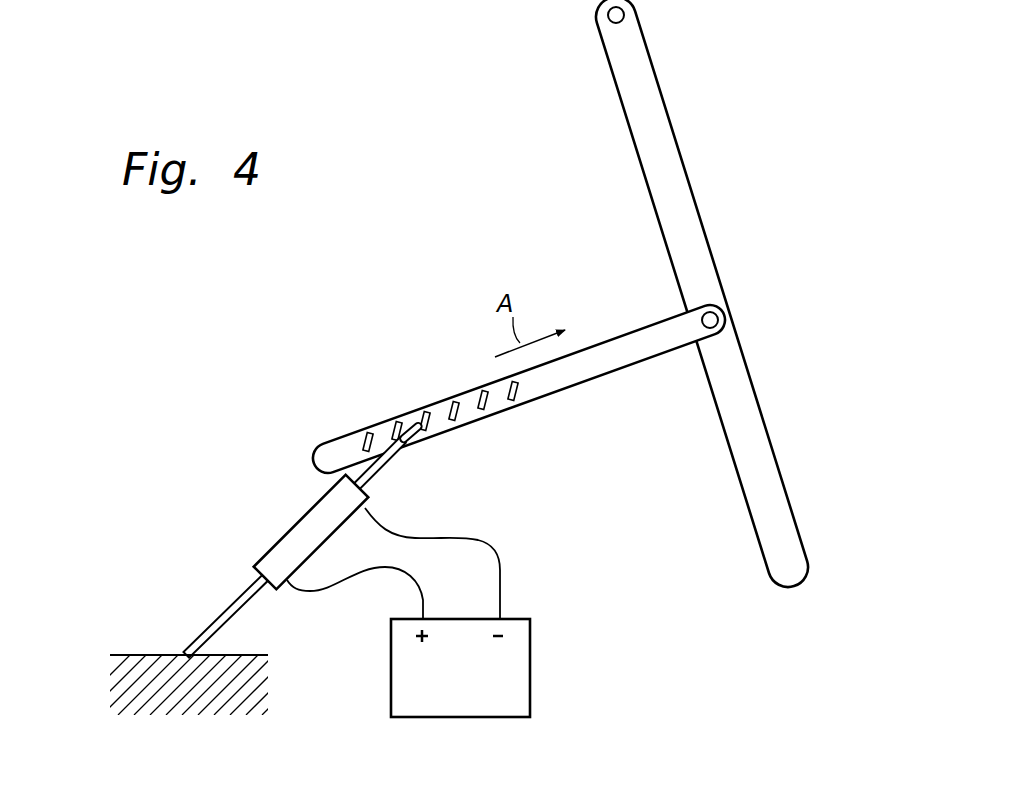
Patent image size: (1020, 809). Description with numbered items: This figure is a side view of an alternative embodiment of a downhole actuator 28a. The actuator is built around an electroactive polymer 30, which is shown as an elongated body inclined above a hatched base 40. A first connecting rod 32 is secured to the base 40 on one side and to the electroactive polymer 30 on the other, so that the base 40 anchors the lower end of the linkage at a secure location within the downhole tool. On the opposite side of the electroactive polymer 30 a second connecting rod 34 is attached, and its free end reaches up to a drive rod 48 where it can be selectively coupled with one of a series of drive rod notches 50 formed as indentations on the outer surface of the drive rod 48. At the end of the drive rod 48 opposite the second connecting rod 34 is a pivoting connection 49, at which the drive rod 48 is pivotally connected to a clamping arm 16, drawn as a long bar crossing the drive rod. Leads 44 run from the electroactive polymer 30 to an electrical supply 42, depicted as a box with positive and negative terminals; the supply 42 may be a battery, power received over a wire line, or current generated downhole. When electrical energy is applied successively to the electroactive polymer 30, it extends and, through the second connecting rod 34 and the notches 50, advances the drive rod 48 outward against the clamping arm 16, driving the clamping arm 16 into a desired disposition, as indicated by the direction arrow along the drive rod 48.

The clamping arm 16 is at (633, 145).
The downhole actuator 28a is at (304, 539).
The electroactive polymer 30 is at (285, 537).
The first connecting rod 32 is at (227, 602).
The second connecting rod 34 is at (378, 475).
The base 40 is at (123, 655).
The electrical supply 42 is at (530, 672).
The leads 44 is at (485, 542).
The drive rod 48 is at (577, 385).
The pivoting connection 49 is at (716, 316).
The drive rod notches 50 is at (480, 392).